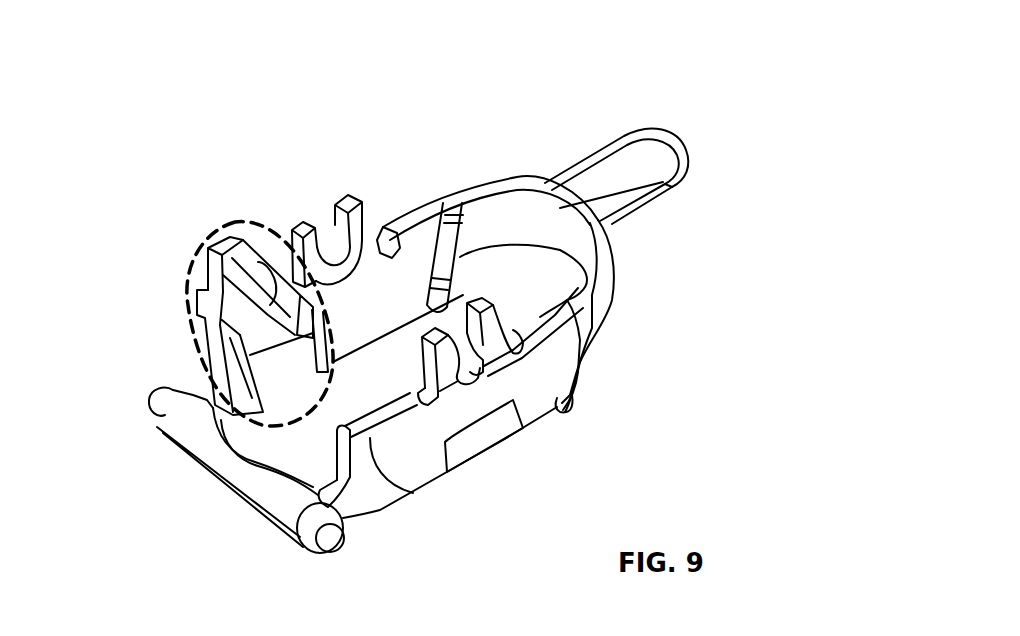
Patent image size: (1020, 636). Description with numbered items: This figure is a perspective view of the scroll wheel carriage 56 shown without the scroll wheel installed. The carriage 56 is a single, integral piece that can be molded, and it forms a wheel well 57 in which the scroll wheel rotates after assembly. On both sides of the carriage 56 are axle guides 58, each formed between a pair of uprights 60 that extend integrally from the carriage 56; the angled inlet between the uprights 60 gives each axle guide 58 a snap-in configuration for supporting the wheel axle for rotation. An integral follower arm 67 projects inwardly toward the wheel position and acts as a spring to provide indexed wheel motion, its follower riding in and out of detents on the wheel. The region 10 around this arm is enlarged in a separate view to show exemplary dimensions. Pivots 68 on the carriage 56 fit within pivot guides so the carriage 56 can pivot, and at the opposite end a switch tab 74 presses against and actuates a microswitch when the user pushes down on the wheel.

The region 10 is at (188, 270).
The carriage 56 is at (492, 187).
The wheel well 57 is at (373, 340).
The axle guides 58 is at (473, 372).
The uprights 60 is at (352, 197).
The follower arm 67 is at (254, 272).
The pivots 68 is at (327, 547).
The switch tab 74 is at (643, 158).